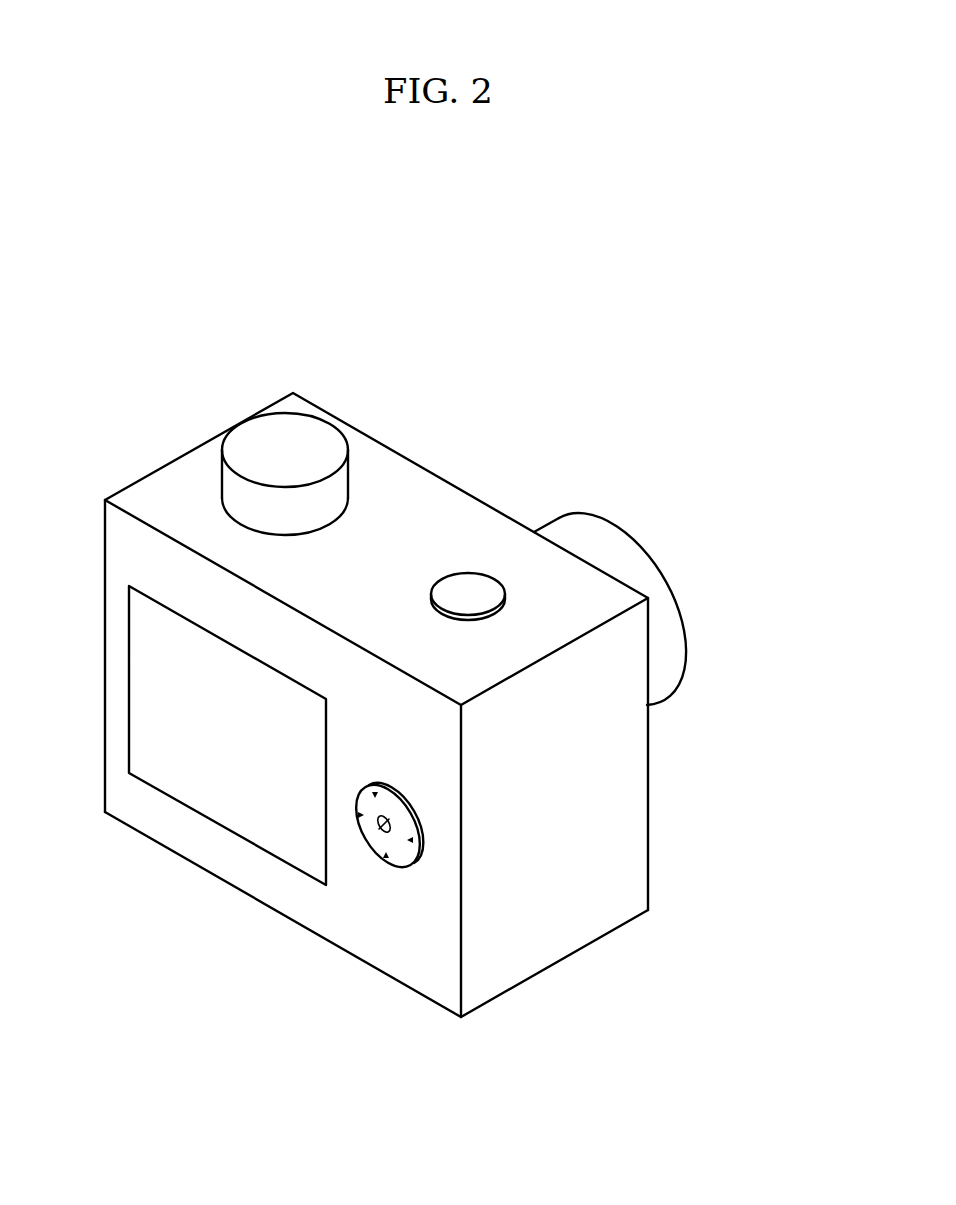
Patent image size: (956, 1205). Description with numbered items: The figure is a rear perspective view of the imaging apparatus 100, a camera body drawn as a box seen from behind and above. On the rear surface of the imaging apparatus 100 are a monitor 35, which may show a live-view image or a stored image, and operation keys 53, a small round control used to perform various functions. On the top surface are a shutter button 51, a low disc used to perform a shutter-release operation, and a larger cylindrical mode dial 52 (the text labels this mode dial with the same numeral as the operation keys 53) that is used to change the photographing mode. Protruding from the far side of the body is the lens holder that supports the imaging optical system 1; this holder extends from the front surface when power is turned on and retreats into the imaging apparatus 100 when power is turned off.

The imaging apparatus 100 is at (170, 317).
The imaging optical system 1 is at (655, 513).
The mode dial 52 is at (333, 423).
The shutter button 51 is at (459, 573).
The monitor 35 is at (227, 830).
The operation keys 53 is at (388, 860).